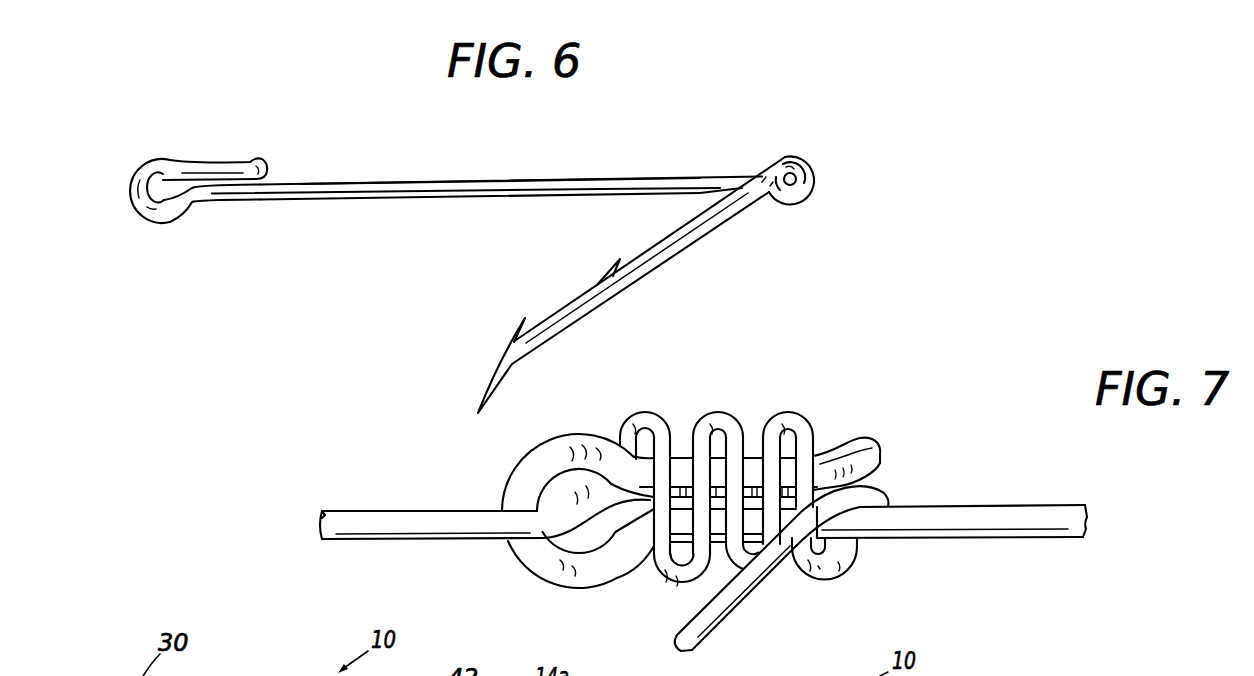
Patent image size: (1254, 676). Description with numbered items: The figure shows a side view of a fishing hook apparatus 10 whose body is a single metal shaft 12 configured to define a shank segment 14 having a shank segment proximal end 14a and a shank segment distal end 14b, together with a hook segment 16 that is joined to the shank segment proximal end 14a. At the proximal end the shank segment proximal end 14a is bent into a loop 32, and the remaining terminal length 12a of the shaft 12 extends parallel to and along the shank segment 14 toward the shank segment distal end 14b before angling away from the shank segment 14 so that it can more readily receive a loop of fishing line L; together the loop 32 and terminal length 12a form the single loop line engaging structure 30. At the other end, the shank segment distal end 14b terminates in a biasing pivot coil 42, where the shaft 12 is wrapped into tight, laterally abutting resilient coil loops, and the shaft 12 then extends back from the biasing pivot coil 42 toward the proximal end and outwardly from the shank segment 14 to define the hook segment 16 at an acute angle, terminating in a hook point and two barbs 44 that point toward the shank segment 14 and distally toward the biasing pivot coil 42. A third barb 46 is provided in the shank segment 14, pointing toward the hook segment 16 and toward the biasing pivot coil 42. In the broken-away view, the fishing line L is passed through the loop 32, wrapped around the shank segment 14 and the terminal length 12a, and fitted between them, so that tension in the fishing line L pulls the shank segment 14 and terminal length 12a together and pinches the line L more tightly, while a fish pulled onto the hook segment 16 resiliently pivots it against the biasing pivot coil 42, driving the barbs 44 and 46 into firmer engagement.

In FIG. 6, the fishing hook apparatus 10 is at (483, 233).
In FIG. 7, the fishing hook apparatus 10 is at (952, 452).
In FIG. 6, the metal shaft 12 is at (428, 180).
In FIG. 7, the metal shaft 12 is at (982, 518).
In FIG. 6, the terminal length of the shaft 12a is at (213, 168).
In FIG. 7, the terminal length of the shaft 12a is at (683, 460).
In FIG. 6, the shank segment 14 is at (336, 182).
In FIG. 6, the shank segment proximal end 14a is at (200, 197).
In FIG. 6, the shank segment distal end 14b is at (752, 197).
In FIG. 6, the hook segment 16 is at (648, 275).
In FIG. 6, the single loop line engaging structure 30 is at (181, 213).
In FIG. 7, the single loop line engaging structure 30 is at (699, 460).
In FIG. 6, the loop 32 is at (143, 166).
In FIG. 7, the loop 32 is at (552, 448).
In FIG. 6, the biasing pivot coil 42 is at (803, 195).
In FIG. 6, the barbs 44 is at (512, 330).
In FIG. 6, the third barb 46 is at (626, 200).
In FIG. 7, the fishing line L is at (403, 520).